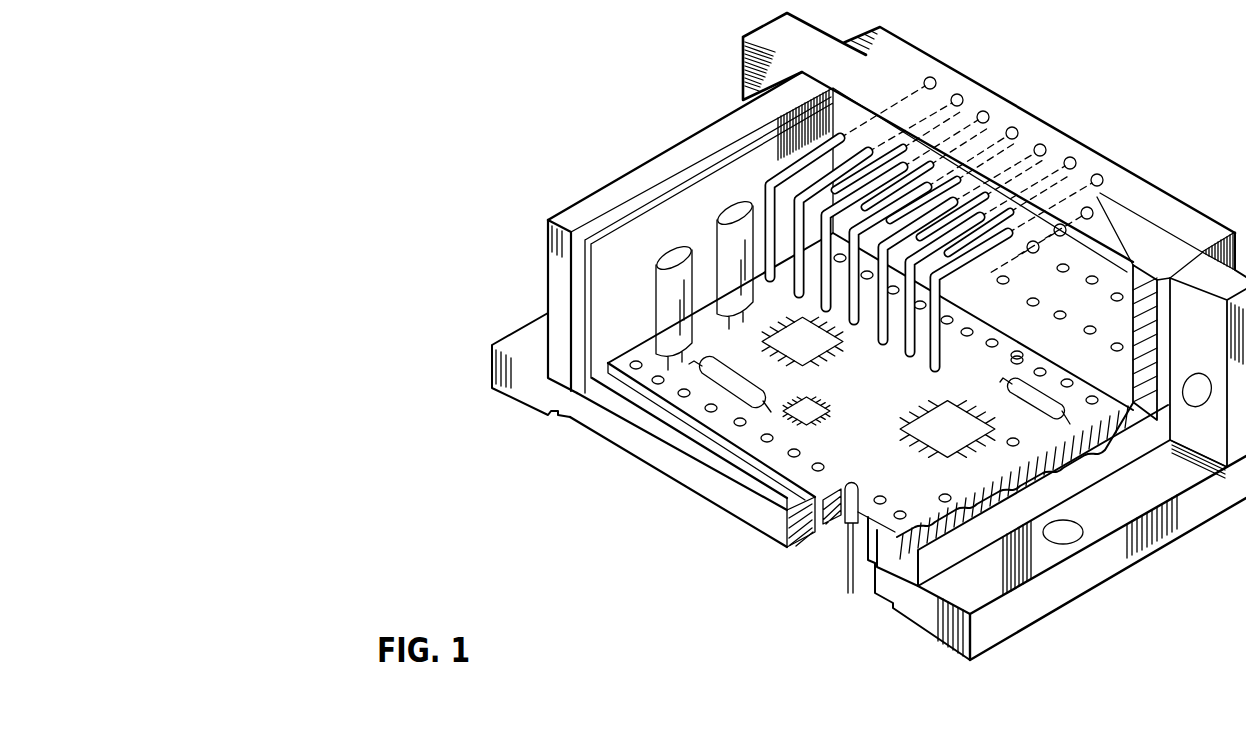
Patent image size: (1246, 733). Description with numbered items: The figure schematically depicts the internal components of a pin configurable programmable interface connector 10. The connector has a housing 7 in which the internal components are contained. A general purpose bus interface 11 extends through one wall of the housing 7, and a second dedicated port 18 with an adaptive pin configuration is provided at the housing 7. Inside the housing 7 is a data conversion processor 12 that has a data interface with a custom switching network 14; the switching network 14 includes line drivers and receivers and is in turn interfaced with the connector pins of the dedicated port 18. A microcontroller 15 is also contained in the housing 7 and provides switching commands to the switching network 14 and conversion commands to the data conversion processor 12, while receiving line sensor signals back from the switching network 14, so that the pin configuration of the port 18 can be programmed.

The housing 7 is at (1120, 556).
The pin configurable programmable interface connector 10 is at (528, 384).
The general purpose bus interface 11 is at (845, 576).
The data conversion processor 12 is at (917, 430).
The custom switching network 14 is at (827, 414).
The microcontroller 15 is at (812, 346).
The second dedicated port 18 is at (1112, 160).